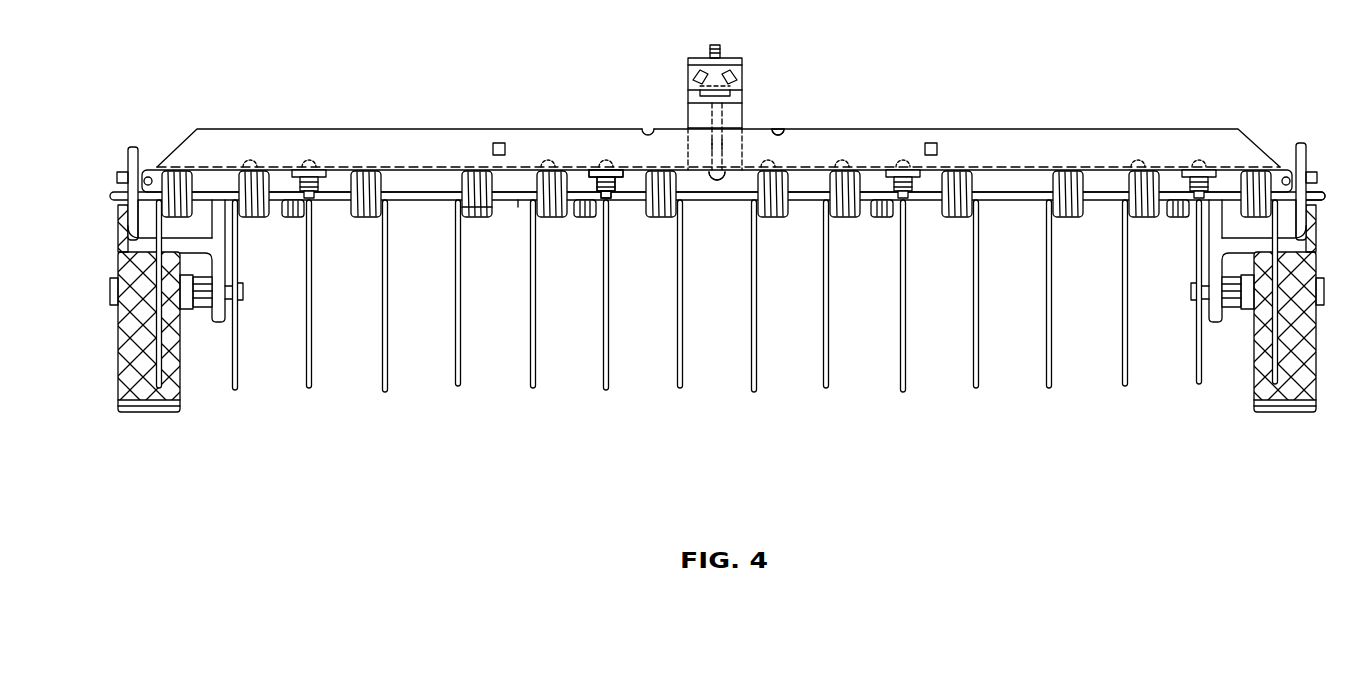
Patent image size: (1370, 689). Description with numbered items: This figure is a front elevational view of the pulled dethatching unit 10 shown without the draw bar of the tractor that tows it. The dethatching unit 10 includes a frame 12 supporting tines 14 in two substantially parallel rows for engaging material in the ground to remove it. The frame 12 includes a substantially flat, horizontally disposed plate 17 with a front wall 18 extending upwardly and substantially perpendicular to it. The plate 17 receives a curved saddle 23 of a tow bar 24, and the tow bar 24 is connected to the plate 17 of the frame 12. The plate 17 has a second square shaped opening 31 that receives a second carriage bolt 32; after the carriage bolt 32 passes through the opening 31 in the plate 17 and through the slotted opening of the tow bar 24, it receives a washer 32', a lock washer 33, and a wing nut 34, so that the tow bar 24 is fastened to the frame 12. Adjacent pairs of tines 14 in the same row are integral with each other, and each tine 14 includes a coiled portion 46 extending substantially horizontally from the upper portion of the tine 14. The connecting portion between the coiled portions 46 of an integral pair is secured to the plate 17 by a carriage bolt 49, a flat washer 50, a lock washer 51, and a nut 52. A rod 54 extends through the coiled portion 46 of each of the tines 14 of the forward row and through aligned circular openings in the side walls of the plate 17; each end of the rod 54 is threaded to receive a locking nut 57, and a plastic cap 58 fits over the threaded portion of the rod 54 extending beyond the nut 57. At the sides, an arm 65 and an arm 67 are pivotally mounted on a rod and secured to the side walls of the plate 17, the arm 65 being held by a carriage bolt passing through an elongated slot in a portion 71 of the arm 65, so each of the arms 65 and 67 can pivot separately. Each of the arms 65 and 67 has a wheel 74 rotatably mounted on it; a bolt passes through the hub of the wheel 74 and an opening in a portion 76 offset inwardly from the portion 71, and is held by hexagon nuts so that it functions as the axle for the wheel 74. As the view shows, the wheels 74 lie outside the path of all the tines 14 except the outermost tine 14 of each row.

The pulled dethatching unit 10 is at (514, 103).
The frame 12 is at (431, 175).
The tines 14 is at (538, 358).
The plate 17 is at (778, 164).
The front wall 18 is at (432, 130).
The curved saddle 23 is at (716, 180).
The tow bar 24 is at (687, 112).
The second square shaped opening 31 is at (724, 152).
The second carriage bolt 32 is at (735, 39).
The washer 32' is at (685, 82).
The lock washer 33 is at (742, 91).
The wing nut 34 is at (739, 75).
The coiled portion 46 is at (361, 219).
The carriage bolt 49 is at (600, 161).
The flat washer 50 is at (611, 176).
The lock washer 51 is at (611, 186).
The nut 52 is at (606, 208).
The rod 54 is at (518, 208).
The locking nut 57 is at (121, 236).
The plastic cap 58 is at (112, 197).
The arm 65 is at (1310, 150).
The arm 67 is at (126, 154).
The portion 71 is at (1312, 162).
The wheel 74 is at (118, 362).
The portion 76 is at (1216, 323).